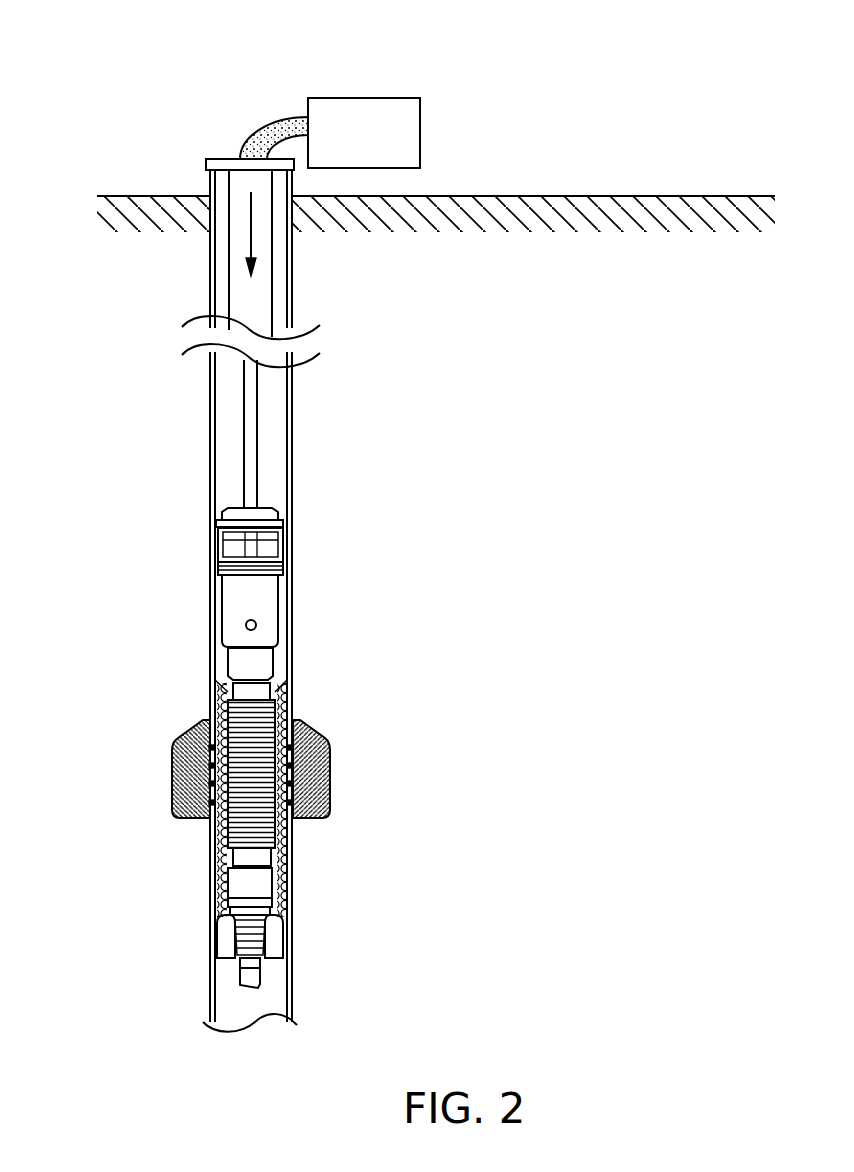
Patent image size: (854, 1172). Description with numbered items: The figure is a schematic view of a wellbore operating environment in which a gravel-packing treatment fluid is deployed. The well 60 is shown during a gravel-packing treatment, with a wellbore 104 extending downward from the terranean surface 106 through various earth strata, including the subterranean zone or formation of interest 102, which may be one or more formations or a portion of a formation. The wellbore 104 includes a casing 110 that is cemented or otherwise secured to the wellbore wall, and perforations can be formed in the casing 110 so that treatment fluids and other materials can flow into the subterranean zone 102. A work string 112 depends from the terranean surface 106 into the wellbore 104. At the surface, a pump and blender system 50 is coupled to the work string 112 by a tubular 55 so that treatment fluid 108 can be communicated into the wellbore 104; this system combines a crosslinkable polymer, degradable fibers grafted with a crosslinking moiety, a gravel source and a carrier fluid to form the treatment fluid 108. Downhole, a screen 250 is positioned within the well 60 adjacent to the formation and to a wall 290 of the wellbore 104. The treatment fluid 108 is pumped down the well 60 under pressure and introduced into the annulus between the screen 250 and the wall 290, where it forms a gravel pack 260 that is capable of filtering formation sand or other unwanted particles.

The pump and blender system 50 is at (363, 98).
The tubular 55 is at (277, 118).
The treatment fluid 108 is at (257, 134).
The terranean surface 106 is at (600, 195).
The casing 110 is at (212, 303).
The wellbore 104 is at (220, 276).
The work string 112 is at (252, 408).
The well 60 is at (187, 540).
The wall of the subterranean wellbore 290 is at (280, 703).
The gravel pack 260 is at (217, 717).
The screen 250 is at (273, 832).
The subterranean zone or formation of interest 102 is at (328, 738).